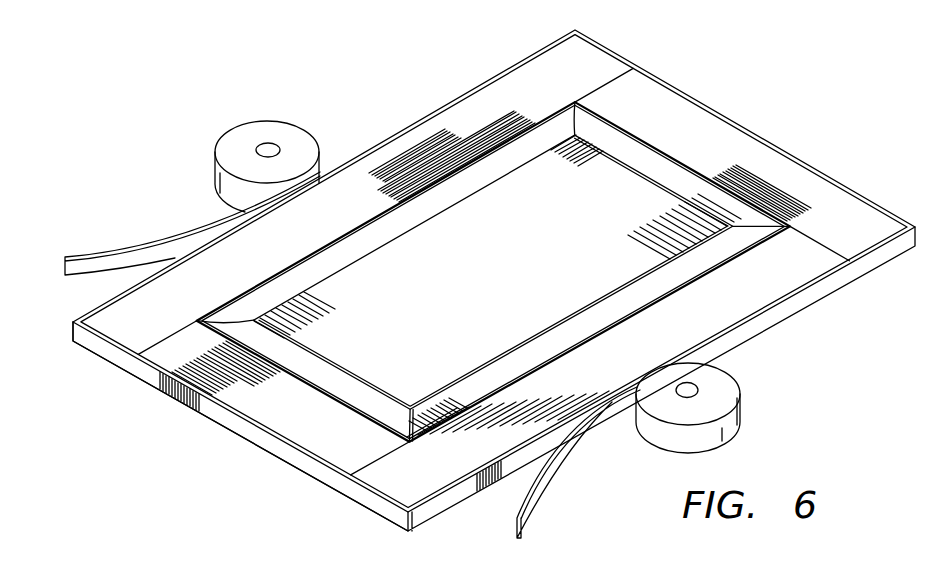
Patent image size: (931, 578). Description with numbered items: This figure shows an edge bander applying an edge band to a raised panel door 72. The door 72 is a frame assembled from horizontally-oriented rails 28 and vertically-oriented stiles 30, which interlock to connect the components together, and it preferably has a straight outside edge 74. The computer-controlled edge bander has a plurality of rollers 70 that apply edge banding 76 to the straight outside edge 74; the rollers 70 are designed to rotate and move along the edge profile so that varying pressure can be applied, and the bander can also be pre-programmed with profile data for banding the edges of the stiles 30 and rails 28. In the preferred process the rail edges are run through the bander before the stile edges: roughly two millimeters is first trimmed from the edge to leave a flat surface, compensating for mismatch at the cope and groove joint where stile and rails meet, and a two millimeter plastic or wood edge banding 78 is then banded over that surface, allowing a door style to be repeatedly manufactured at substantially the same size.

The rails 28 is at (727, 160).
The stiles 30 is at (308, 243).
The rollers 70 is at (261, 130).
The door 72 is at (506, 286).
The outside edge 74 is at (432, 510).
The edge banding 76 is at (106, 262).
The edge banding 78 is at (246, 432).